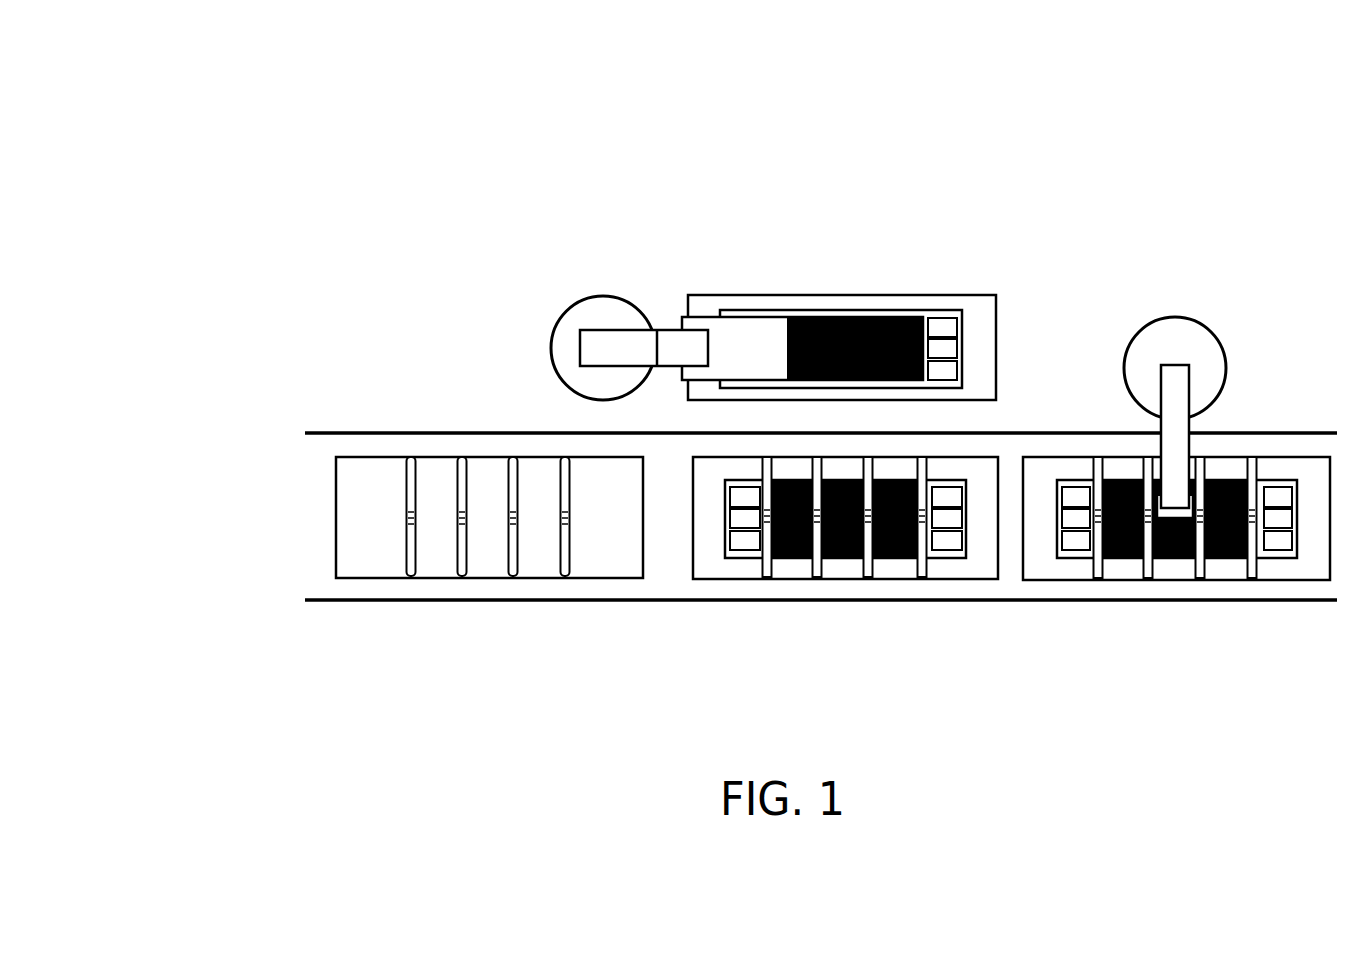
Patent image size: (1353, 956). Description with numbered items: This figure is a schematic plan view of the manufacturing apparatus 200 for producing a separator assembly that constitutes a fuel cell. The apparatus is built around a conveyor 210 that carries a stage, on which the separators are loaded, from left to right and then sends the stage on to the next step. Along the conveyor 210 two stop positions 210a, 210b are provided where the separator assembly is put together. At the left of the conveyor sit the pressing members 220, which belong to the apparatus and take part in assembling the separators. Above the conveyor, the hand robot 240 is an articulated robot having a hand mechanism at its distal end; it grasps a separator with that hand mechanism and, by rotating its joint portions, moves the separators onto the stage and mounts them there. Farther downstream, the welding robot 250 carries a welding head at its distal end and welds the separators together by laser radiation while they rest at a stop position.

The manufacturing apparatus 200 is at (263, 235).
The conveyor 210 is at (333, 592).
The stop position 210a is at (885, 590).
The stop position 210b is at (1037, 590).
The pressing members 220 is at (367, 495).
The hand robot 240 is at (580, 298).
The welding robot 250 is at (1200, 322).